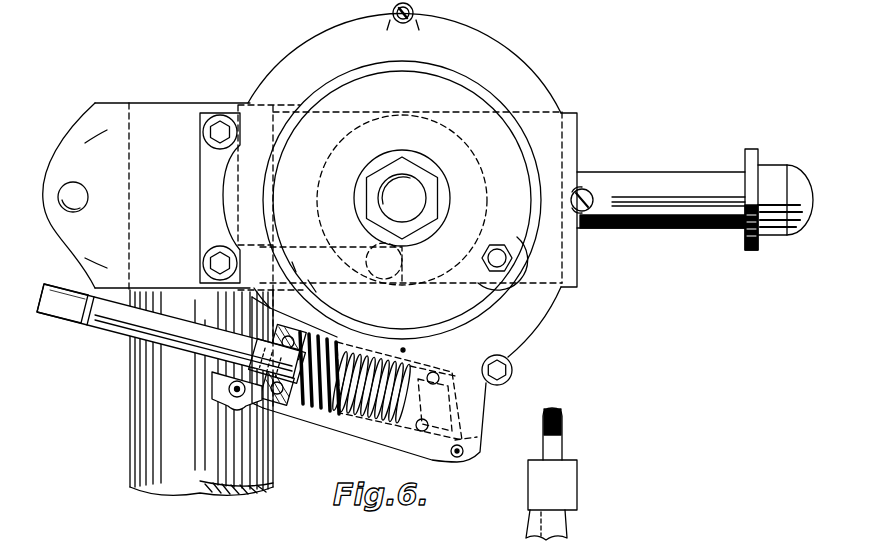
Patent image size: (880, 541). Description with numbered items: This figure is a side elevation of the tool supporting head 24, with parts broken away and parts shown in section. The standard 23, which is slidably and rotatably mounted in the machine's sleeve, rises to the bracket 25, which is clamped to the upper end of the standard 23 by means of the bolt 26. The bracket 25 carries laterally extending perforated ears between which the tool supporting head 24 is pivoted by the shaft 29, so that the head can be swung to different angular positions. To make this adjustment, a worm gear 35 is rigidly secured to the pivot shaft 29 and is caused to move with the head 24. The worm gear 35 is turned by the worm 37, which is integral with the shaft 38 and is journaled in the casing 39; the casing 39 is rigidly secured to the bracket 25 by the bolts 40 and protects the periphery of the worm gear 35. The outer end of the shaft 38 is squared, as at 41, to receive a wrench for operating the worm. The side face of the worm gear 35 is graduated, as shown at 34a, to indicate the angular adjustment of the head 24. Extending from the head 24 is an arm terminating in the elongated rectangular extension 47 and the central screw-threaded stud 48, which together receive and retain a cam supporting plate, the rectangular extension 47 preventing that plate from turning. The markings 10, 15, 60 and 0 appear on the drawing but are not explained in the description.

The bracket 25 is at (177, 114).
The bolt 26 is at (72, 183).
The bolts 40 is at (210, 136).
The tool supporting head 24 is at (571, 292).
The casing 39 is at (522, 329).
The ring 60 is at (402, 200).
The ring mark 15 is at (321, 281).
The graduations 34a is at (292, 265).
The motor outline 10 is at (400, 197).
The shaft 29 is at (410, 196).
The worm gear 35 is at (498, 246).
The standard 23 is at (147, 439).
The shaft 38 is at (113, 324).
The squared end 41 is at (77, 313).
The worm 37 is at (330, 412).
The case point 0 is at (403, 350).
The screw-threaded stud 48 is at (556, 450).
The rectangular extension 47 is at (578, 488).